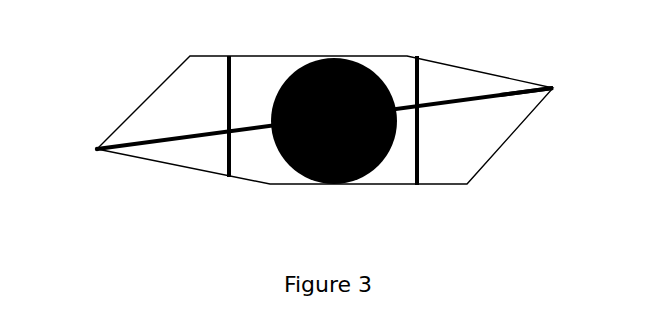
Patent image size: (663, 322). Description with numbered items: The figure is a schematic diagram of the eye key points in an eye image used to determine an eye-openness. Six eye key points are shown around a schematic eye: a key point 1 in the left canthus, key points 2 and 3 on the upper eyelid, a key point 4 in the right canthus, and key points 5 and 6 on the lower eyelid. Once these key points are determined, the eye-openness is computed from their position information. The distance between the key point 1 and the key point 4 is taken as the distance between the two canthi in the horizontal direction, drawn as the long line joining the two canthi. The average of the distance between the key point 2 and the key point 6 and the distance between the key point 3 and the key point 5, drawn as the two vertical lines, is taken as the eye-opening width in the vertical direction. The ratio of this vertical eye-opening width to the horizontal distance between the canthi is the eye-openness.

The key point in a left canthus 1 is at (305, 119).
The key point on an upper eyelid 2 is at (222, 89).
The key point on an upper eyelid 3 is at (416, 93).
The key point in a right canthus 4 is at (553, 75).
The key point on a lower eyelid 5 is at (417, 195).
The key point on a lower eyelid 6 is at (219, 190).